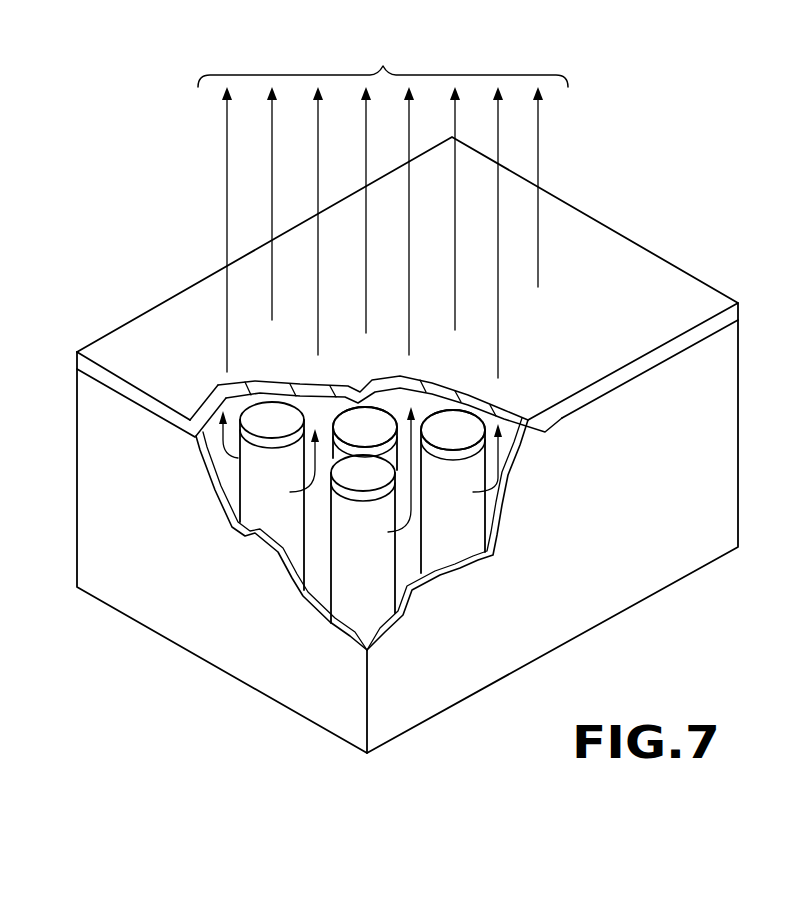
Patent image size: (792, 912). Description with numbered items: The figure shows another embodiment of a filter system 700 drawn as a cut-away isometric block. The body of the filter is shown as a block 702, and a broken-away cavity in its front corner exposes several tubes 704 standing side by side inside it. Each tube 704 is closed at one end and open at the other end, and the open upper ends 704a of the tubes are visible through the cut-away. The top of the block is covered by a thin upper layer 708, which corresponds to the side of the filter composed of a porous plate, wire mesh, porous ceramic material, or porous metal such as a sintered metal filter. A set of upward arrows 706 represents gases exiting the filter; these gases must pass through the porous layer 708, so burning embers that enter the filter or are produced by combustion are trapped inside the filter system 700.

The filter system 700 is at (678, 126).
The substrate / base body 702 is at (165, 570).
The tubes 704 is at (343, 538).
The top surfaces of pillars 704a is at (438, 421).
The emitted light / flow arrows 706 is at (578, 470).
The top layer 708 is at (648, 316).